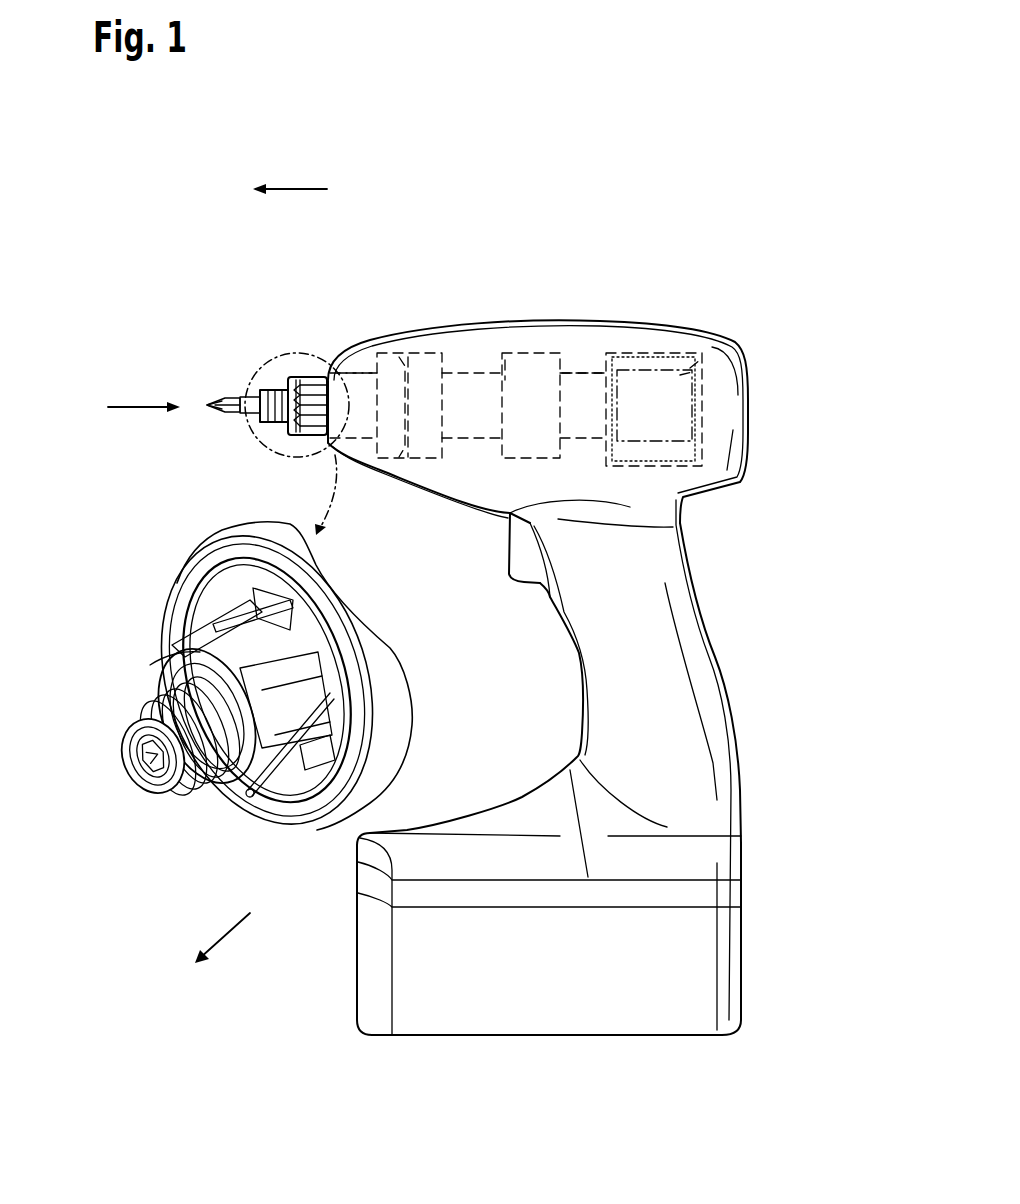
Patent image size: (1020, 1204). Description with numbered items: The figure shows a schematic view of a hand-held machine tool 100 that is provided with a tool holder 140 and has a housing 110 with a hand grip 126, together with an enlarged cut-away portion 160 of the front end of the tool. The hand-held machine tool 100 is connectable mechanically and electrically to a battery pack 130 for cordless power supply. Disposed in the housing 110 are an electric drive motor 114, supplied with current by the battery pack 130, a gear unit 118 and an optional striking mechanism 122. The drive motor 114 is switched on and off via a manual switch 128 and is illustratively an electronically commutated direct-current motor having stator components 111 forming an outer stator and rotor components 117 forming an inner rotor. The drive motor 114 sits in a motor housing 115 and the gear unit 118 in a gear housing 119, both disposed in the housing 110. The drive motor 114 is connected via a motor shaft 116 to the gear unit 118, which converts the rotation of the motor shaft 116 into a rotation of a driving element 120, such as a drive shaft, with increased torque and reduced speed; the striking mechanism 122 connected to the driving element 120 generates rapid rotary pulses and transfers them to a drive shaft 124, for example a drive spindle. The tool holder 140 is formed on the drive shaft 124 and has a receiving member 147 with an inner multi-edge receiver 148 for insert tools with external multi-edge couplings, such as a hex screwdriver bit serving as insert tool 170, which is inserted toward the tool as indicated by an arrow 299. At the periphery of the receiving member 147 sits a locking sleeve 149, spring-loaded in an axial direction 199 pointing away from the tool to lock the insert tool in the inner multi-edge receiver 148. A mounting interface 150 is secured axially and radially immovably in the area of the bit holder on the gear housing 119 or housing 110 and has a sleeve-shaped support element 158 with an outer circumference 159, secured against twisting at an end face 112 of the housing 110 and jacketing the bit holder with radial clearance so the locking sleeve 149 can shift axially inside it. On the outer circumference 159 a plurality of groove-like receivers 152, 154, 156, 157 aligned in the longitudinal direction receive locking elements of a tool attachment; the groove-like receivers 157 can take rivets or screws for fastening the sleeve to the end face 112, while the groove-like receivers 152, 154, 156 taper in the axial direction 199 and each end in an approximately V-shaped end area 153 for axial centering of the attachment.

The hand-held machine tool 100 is at (712, 206).
The housing 110 is at (722, 445).
The stator components 111 is at (660, 352).
The end face 112 is at (231, 585).
The drive motor 114 is at (705, 382).
The motor housing 115 is at (705, 415).
The motor shaft 116 is at (585, 353).
The rotor components 117 is at (700, 358).
The gear unit 118 is at (520, 352).
The gear housing 119 is at (585, 372).
The driving element 120 is at (463, 380).
The striking mechanism 122 is at (412, 352).
The drive shaft 124 is at (348, 350).
The hand grip 126 is at (717, 763).
The manual switch 128 is at (528, 557).
The battery pack 130 is at (717, 930).
The tool holder 140 is at (244, 386).
The receiving member 147 is at (155, 792).
The inner multi-edge receiver 148 is at (148, 770).
The locking sleeve 149 is at (136, 716).
The mounting interface 150 is at (274, 379).
The groove-like receivers 152 is at (340, 672).
The V-shaped end area 153 is at (155, 668).
The groove-like receivers 154 is at (134, 652).
The groove-like receivers 156 is at (217, 812).
The groove-like receivers 157 is at (232, 628).
The support element 158 is at (165, 640).
The outer circumference 159 is at (345, 700).
The enlarged cut-away portion 160 is at (270, 352).
The insert tool 170 is at (214, 412).
The axial direction 199 is at (295, 189).
The arrow 299 is at (135, 407).